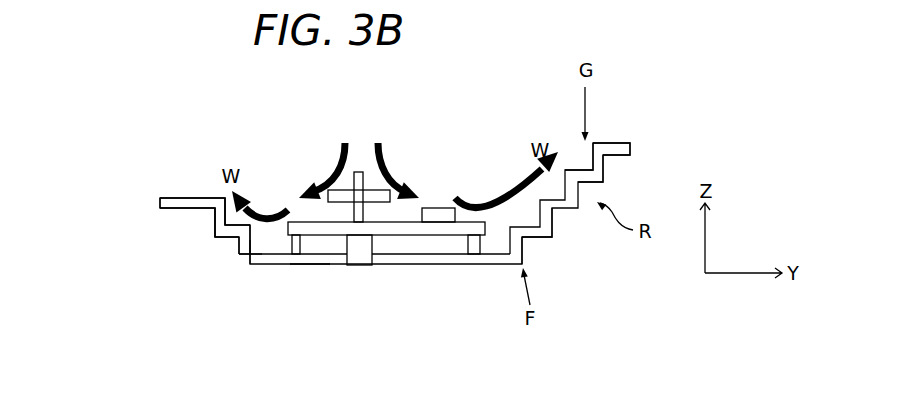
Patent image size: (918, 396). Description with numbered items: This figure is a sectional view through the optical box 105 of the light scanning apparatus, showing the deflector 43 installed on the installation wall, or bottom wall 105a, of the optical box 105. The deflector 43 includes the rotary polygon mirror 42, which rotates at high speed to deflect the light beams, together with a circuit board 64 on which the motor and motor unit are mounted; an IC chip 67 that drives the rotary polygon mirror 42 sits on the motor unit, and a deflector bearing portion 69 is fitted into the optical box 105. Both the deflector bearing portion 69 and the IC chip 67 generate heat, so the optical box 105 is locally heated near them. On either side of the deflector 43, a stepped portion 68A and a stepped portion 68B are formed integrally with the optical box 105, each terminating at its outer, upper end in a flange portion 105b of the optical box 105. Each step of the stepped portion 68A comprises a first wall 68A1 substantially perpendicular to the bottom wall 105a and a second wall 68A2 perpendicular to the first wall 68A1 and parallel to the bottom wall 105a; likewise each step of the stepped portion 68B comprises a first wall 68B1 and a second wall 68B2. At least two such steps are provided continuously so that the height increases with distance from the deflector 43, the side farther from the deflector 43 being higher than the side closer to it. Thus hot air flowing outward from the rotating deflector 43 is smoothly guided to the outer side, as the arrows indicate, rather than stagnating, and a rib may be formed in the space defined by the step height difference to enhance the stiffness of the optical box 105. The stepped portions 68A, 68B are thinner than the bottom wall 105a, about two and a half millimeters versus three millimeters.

The rotary polygon mirror 42 is at (350, 188).
The deflector 43 is at (359, 161).
The circuit board 64 is at (415, 228).
The IC chip 67 is at (442, 207).
The deflector bearing portion 69 is at (368, 267).
The stepped portion 68A is at (207, 185).
The first wall 68A1 is at (248, 252).
The second wall 68A2 is at (237, 240).
The stepped portion 68B is at (620, 127).
The first wall 68B1 is at (524, 252).
The second wall 68B2 is at (533, 237).
The optical box 105 is at (277, 275).
The installation wall 105a is at (308, 267).
The flange of base plate 105b is at (170, 197).